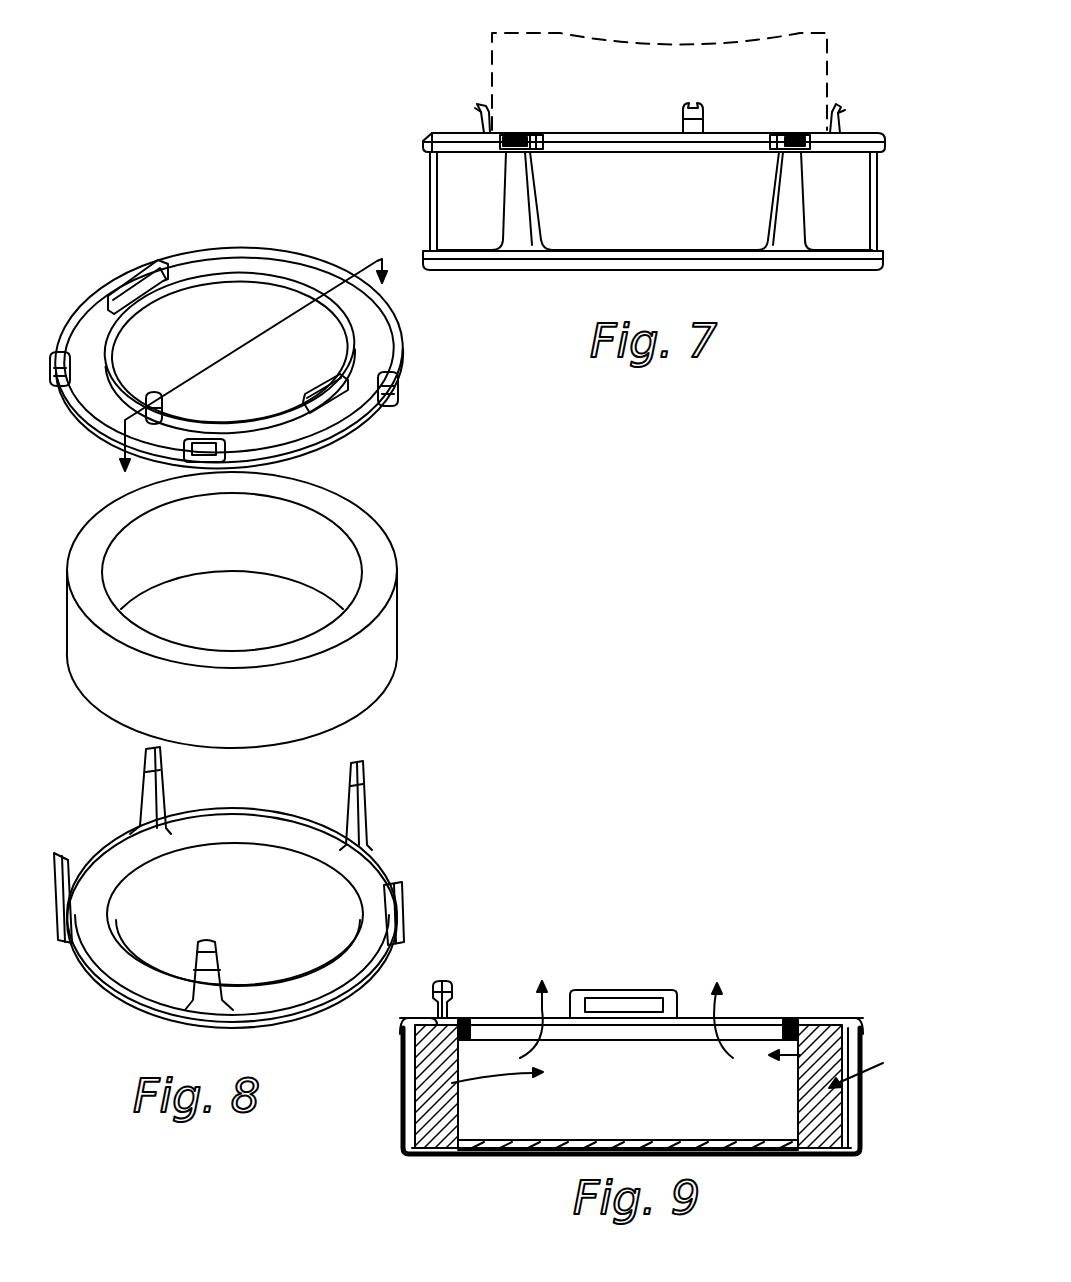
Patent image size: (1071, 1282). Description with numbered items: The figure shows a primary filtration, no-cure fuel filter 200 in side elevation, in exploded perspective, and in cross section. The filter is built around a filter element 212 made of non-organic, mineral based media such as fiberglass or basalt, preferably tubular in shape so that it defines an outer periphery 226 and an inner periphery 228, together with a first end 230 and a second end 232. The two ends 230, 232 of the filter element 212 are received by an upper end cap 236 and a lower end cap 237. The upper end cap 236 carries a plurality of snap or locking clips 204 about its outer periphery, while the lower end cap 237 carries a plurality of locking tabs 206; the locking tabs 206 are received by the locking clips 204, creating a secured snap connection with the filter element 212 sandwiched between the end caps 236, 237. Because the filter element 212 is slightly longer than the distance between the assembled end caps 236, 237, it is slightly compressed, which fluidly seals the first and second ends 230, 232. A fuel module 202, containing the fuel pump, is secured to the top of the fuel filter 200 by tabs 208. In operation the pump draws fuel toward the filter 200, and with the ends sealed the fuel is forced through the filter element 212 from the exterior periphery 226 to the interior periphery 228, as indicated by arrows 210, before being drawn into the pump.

In FIG. 7, the primary filtration fuel filter 200 is at (398, 138).
In FIG. 8, the primary filtration fuel filter 200 is at (446, 564).
In FIG. 9, the primary filtration fuel filter 200 is at (745, 983).
In FIG. 7, the fuel module 202 is at (525, 74).
In FIG. 8, the locking clips 204 is at (55, 386).
In FIG. 8, the locking tabs 206 is at (146, 778).
In FIG. 7, the tabs 208 is at (478, 106).
In FIG. 8, the tabs 208 is at (136, 276).
In FIG. 9, the tabs 208 is at (650, 957).
In FIG. 9, the arrows 210 is at (536, 1002).
In FIG. 7, the filter element 212 is at (637, 178).
In FIG. 8, the filter element 212 is at (402, 631).
In FIG. 9, the filter element 212 is at (790, 1094).
In FIG. 8, the outer periphery 226 is at (380, 666).
In FIG. 9, the outer periphery 226 is at (430, 1107).
In FIG. 8, the inner periphery 228 is at (186, 630).
In FIG. 9, the inner periphery 228 is at (462, 1115).
In FIG. 8, the first end 230 is at (346, 504).
In FIG. 9, the first end 230 is at (820, 1016).
In FIG. 8, the second end 232 is at (370, 720).
In FIG. 9, the second end 232 is at (812, 1158).
In FIG. 8, the upper end cap 236 is at (392, 336).
In FIG. 8, the lower end cap 237 is at (342, 866).